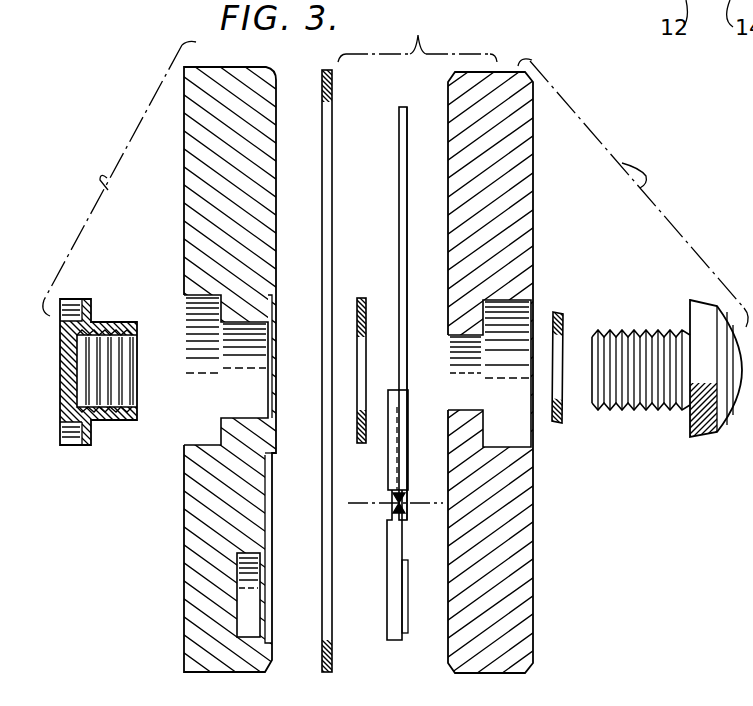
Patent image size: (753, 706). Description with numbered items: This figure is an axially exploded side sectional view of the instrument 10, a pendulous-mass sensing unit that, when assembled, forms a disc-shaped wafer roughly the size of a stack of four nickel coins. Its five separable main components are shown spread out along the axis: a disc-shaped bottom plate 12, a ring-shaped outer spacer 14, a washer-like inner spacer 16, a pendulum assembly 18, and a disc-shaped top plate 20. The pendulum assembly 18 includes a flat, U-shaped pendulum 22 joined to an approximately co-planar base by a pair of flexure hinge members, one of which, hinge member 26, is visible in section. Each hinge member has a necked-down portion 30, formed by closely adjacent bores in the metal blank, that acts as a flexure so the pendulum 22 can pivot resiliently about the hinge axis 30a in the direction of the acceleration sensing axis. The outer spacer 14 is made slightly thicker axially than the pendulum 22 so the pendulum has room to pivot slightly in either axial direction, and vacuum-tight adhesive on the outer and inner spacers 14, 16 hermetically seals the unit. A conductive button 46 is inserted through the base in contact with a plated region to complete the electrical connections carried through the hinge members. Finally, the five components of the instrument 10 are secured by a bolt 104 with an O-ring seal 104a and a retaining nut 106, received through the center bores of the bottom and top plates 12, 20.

The instrument 10 is at (571, 547).
The bottom plate 12 is at (205, 655).
The outer spacer 14 is at (322, 623).
The inner spacer 16 is at (360, 397).
The pendulum assembly 18 is at (397, 259).
The top plate 20 is at (495, 653).
The pendulum 22 is at (403, 296).
The flexure hinge member 26 is at (398, 548).
The necked-down portion 30 is at (403, 510).
The hinge axis 30a is at (371, 503).
The conductive button 46 is at (408, 443).
The bolt 104 is at (707, 423).
The O-ring seal 104a is at (557, 423).
The retaining nut 106 is at (113, 322).